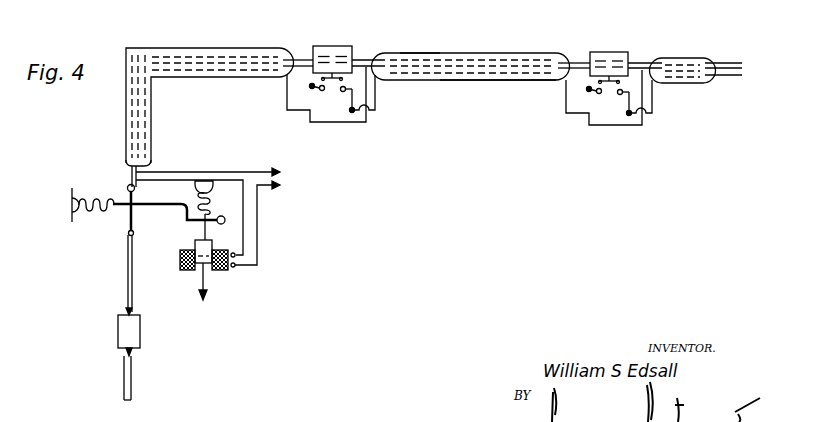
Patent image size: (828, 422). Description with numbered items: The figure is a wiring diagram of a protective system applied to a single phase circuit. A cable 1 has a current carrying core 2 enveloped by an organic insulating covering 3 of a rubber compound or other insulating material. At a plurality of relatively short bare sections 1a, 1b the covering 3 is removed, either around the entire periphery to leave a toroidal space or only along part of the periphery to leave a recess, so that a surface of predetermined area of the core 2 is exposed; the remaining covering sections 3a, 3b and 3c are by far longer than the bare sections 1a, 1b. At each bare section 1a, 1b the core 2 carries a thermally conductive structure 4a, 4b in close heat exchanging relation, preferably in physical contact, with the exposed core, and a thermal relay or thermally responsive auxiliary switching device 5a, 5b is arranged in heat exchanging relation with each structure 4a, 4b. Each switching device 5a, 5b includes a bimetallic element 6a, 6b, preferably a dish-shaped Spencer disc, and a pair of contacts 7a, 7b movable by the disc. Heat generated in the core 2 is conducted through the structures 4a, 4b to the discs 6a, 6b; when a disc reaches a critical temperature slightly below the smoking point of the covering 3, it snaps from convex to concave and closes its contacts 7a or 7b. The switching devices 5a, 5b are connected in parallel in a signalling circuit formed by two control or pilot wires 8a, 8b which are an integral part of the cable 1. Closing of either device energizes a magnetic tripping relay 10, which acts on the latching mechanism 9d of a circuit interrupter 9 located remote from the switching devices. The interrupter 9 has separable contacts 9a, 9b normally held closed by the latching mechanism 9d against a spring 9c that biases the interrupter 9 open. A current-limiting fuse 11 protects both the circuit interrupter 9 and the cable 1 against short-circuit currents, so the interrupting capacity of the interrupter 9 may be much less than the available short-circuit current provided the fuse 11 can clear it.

The cable 1 is at (433, 45).
The bare section 1a is at (367, 59).
The bare section 1b is at (638, 62).
The current carrying core 2 is at (202, 55).
The insulating covering 3 is at (135, 47).
The covering section 3a is at (126, 146).
The covering section 3b is at (513, 79).
The covering section 3c is at (697, 58).
The thermally conductive structure 4a is at (343, 46).
The thermally conductive structure 4b is at (610, 52).
The thermally responsive auxiliary switching device 5a is at (409, 111).
The thermally responsive auxiliary switching device 5b is at (700, 130).
The bimetallic element 6a is at (338, 93).
The bimetallic element 6b is at (608, 83).
The pair of contacts 7a is at (325, 80).
The pair of contacts 7b is at (598, 81).
The control or pilot wire 8a is at (173, 171).
The control or pilot wire 8b is at (192, 178).
The circuit interrupter 9 is at (55, 181).
The separable contact 9a is at (126, 185).
The separable contact 9b is at (134, 193).
The spring 9c is at (112, 209).
The latching mechanism 9d is at (177, 208).
The magnetic tripping relay 10 is at (289, 252).
The current-limiting fuse 11 is at (142, 333).